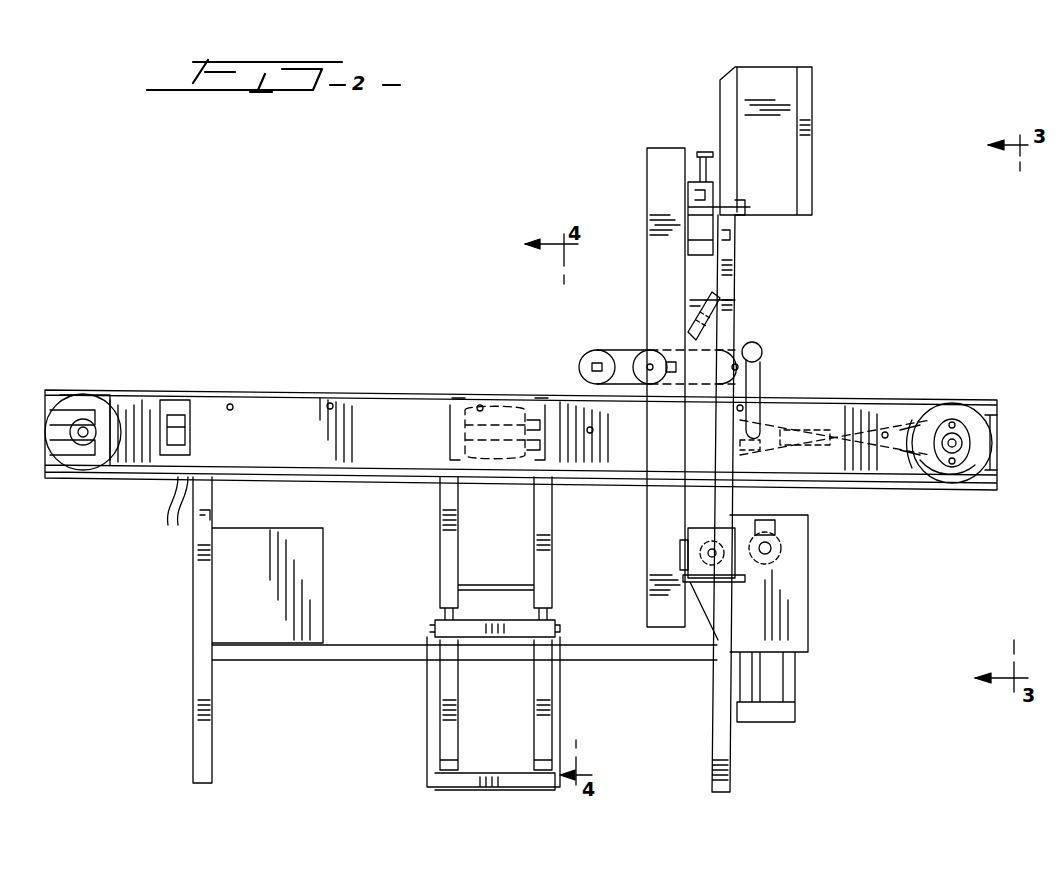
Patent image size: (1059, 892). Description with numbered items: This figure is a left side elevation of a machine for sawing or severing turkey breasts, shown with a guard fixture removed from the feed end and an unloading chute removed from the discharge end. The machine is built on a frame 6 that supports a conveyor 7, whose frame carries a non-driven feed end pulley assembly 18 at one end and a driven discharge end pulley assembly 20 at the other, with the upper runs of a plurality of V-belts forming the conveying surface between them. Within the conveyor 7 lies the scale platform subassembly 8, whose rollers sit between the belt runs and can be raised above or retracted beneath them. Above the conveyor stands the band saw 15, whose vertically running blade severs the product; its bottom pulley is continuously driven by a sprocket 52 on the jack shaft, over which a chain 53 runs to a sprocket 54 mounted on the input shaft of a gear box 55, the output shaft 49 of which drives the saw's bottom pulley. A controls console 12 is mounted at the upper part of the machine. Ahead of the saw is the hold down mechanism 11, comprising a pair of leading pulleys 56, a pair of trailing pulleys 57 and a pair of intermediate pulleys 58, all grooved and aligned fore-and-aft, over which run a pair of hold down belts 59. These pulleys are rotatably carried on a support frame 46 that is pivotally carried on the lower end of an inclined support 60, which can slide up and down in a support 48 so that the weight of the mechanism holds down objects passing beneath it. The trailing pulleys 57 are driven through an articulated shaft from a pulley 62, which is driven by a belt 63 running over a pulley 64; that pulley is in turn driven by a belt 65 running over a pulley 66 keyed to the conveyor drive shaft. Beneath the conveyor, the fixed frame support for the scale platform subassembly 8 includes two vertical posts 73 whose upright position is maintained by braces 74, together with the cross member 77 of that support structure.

The frame 6 is at (197, 569).
The conveyor 7 is at (290, 392).
The scale platform subassembly 8 is at (452, 422).
The hold down mechanism 11 is at (592, 352).
The controls console 12 is at (812, 109).
The band saw 15 is at (648, 187).
The feed end pulley assembly 18 is at (90, 405).
The discharge end pulley assembly 20 is at (1003, 418).
The support frame 46 is at (632, 380).
The support 48 is at (708, 298).
The output shaft 49 is at (683, 556).
The sprocket 52 is at (800, 548).
The chain 53 is at (760, 522).
The sprocket 54 is at (690, 532).
The gear box 55 is at (680, 574).
The leading pulleys 56 is at (578, 367).
The trailing pulleys 57 is at (716, 380).
The intermediate pulleys 58 is at (660, 355).
The hold down belts 59 is at (620, 352).
The inclined support 60 is at (692, 325).
The pulley 62 is at (762, 348).
The belt 63 is at (770, 385).
The pulley 64 is at (770, 452).
The belt 65 is at (866, 430).
The pulley 66 is at (956, 404).
The vertical posts 73 is at (530, 722).
The braces 74 is at (432, 712).
The cross member 77 is at (535, 568).